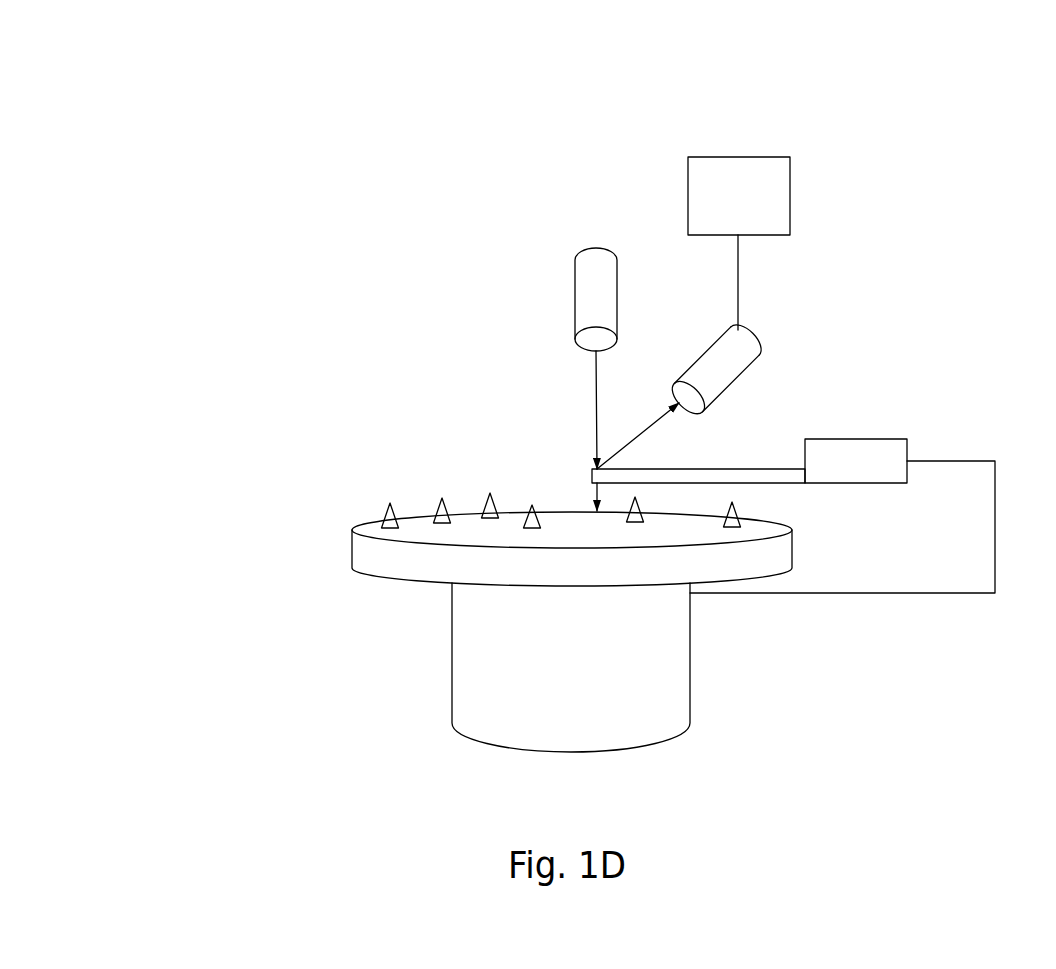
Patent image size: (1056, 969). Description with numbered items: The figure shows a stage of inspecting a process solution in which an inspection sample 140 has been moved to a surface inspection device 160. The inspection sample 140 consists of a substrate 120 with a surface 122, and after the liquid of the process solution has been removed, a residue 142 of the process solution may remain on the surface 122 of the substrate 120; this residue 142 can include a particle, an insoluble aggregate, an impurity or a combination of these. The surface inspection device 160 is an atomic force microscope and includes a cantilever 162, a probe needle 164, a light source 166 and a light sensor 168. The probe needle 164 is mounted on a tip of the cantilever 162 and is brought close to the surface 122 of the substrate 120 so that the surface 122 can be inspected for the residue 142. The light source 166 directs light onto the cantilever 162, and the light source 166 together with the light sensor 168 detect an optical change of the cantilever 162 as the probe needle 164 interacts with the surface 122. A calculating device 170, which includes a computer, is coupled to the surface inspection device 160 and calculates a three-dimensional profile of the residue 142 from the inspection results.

The surface inspection device 160 is at (873, 62).
The cantilever 162 is at (857, 439).
The probe needle 164 is at (593, 487).
The light source 166 is at (598, 248).
The light sensor 168 is at (752, 330).
The calculating device 170 is at (738, 157).
The inspection sample 140 is at (148, 448).
The substrate 120 is at (367, 556).
The surface 122 is at (362, 525).
The residue 142 is at (383, 521).